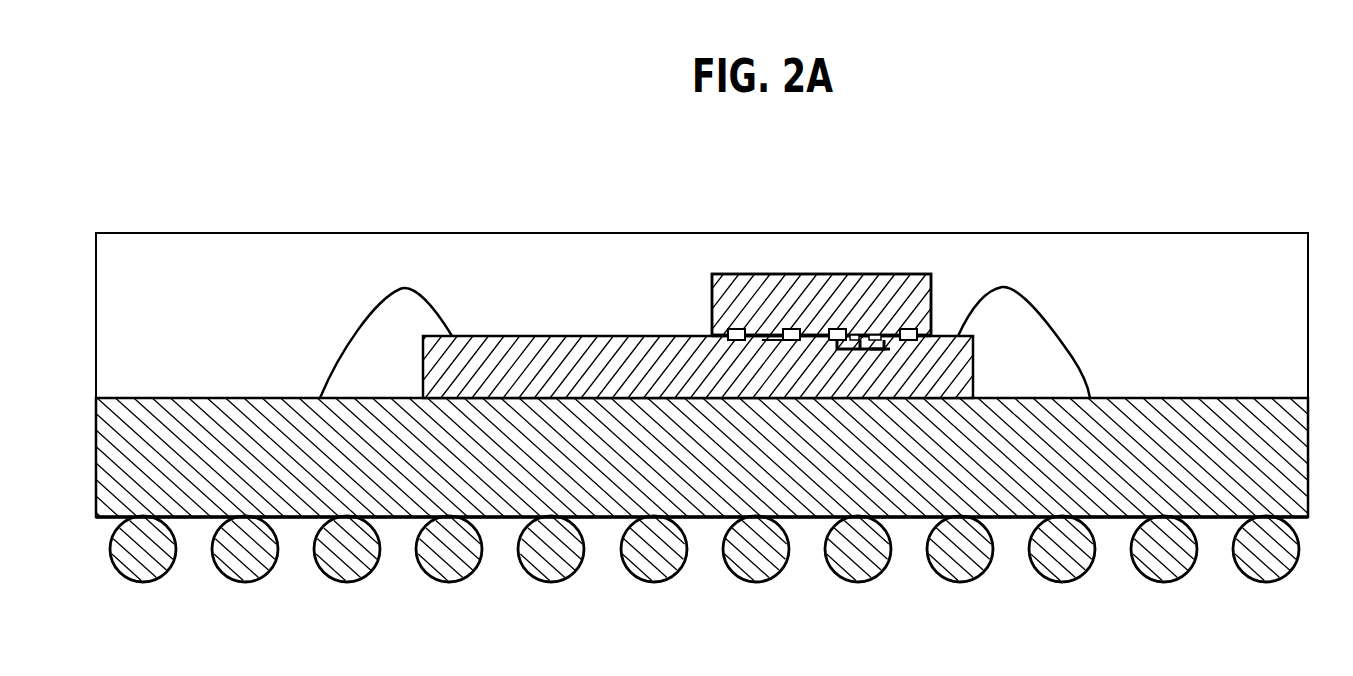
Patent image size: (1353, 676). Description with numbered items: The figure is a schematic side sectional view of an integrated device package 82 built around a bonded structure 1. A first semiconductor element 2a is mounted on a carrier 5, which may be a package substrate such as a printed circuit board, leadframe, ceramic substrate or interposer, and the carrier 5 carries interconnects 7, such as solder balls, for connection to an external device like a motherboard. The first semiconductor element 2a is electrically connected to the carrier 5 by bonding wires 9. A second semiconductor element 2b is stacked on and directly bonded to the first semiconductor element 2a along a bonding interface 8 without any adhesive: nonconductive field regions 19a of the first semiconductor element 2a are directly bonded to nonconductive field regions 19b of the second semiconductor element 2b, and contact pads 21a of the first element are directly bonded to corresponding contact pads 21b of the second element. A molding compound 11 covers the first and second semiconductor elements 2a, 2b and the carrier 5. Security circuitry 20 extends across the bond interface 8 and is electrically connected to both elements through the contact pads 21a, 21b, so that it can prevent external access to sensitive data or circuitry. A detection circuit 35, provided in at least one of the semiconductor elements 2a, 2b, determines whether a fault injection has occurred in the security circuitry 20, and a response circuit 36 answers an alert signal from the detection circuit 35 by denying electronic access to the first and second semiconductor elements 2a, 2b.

The integrated device package 82 is at (1130, 208).
The molding compound 11 is at (578, 257).
The carrier 5 is at (412, 472).
The interconnects 7 is at (545, 562).
The bonding wires 9 is at (360, 331).
The first semiconductor element 2a is at (890, 375).
The second semiconductor element 2b is at (912, 307).
The bonded structure 1 is at (948, 266).
The bonding interface 8 is at (723, 327).
The nonconductive field regions of the first semiconductor element 19a is at (768, 344).
The nonconductive field regions of the second semiconductor element 19b is at (780, 325).
The contact pads of the first semiconductor element 21a is at (790, 343).
The contact pads of the second semiconductor element 21b is at (795, 328).
The security circuitry 20 is at (832, 322).
The detection circuit 35 is at (860, 340).
The response circuit 36 is at (893, 341).